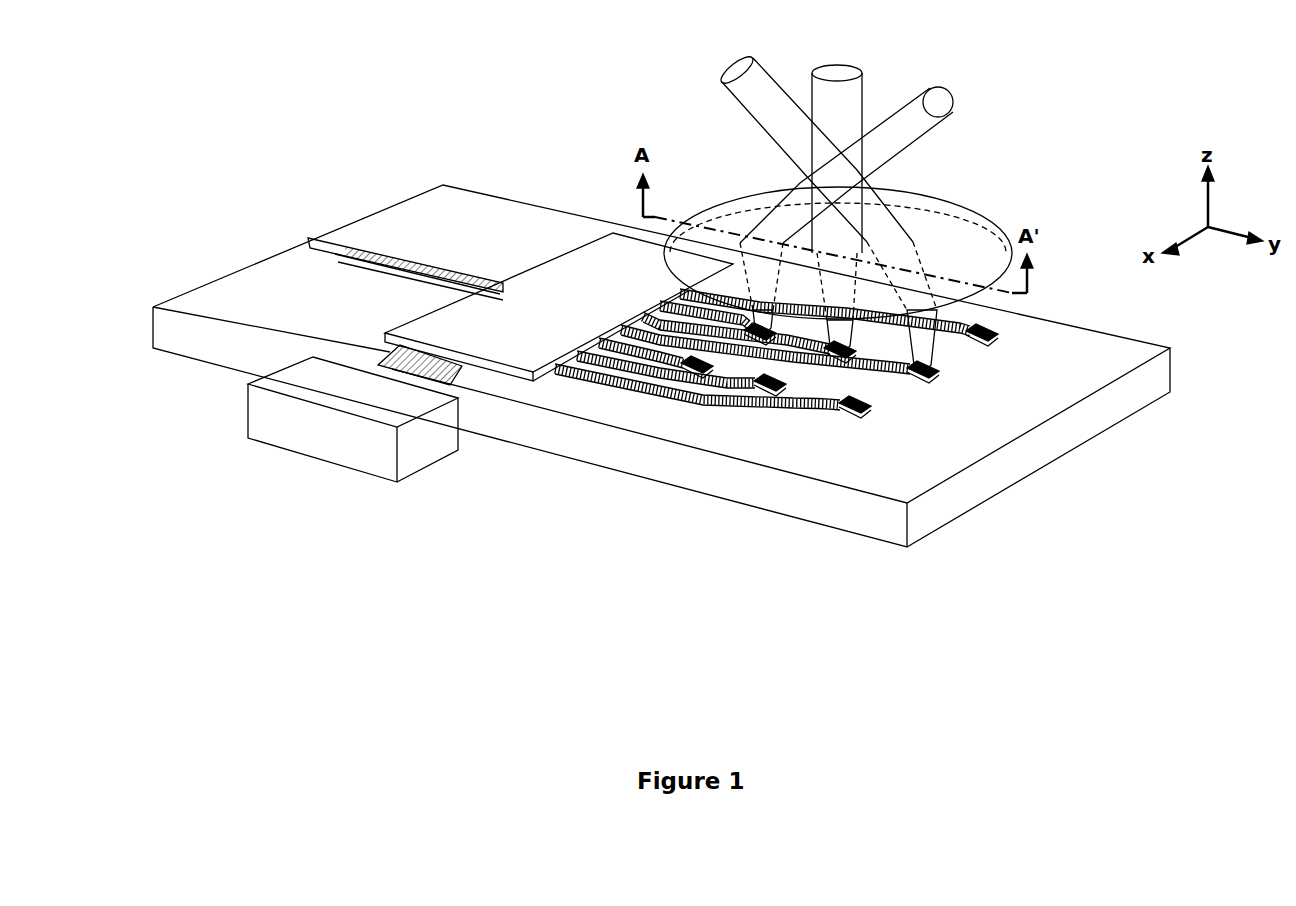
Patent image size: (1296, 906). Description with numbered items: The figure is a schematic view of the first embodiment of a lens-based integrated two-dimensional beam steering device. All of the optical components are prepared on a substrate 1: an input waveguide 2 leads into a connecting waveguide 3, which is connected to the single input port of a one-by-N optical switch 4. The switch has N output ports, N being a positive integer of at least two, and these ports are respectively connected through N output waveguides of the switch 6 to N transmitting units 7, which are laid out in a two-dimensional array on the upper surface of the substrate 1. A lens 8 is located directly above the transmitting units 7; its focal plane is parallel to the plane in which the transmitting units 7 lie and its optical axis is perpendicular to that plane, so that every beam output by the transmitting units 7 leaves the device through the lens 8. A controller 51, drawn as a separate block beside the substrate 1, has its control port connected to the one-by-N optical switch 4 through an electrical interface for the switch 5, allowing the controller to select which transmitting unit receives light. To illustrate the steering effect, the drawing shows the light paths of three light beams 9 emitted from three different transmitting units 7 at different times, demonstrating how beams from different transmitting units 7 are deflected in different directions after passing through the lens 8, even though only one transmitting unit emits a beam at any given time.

The substrate 1 is at (178, 338).
The input waveguide 2 is at (347, 245).
The connecting waveguide 3 is at (447, 268).
The 1×N optical switch 4 is at (590, 268).
The electrical interface for the switch 5 is at (428, 375).
The controller 51 is at (265, 427).
The output waveguides of the switch 6 is at (627, 390).
The transmitting units 7 is at (848, 413).
The lens 8 is at (723, 227).
The light beams 9 is at (897, 138).